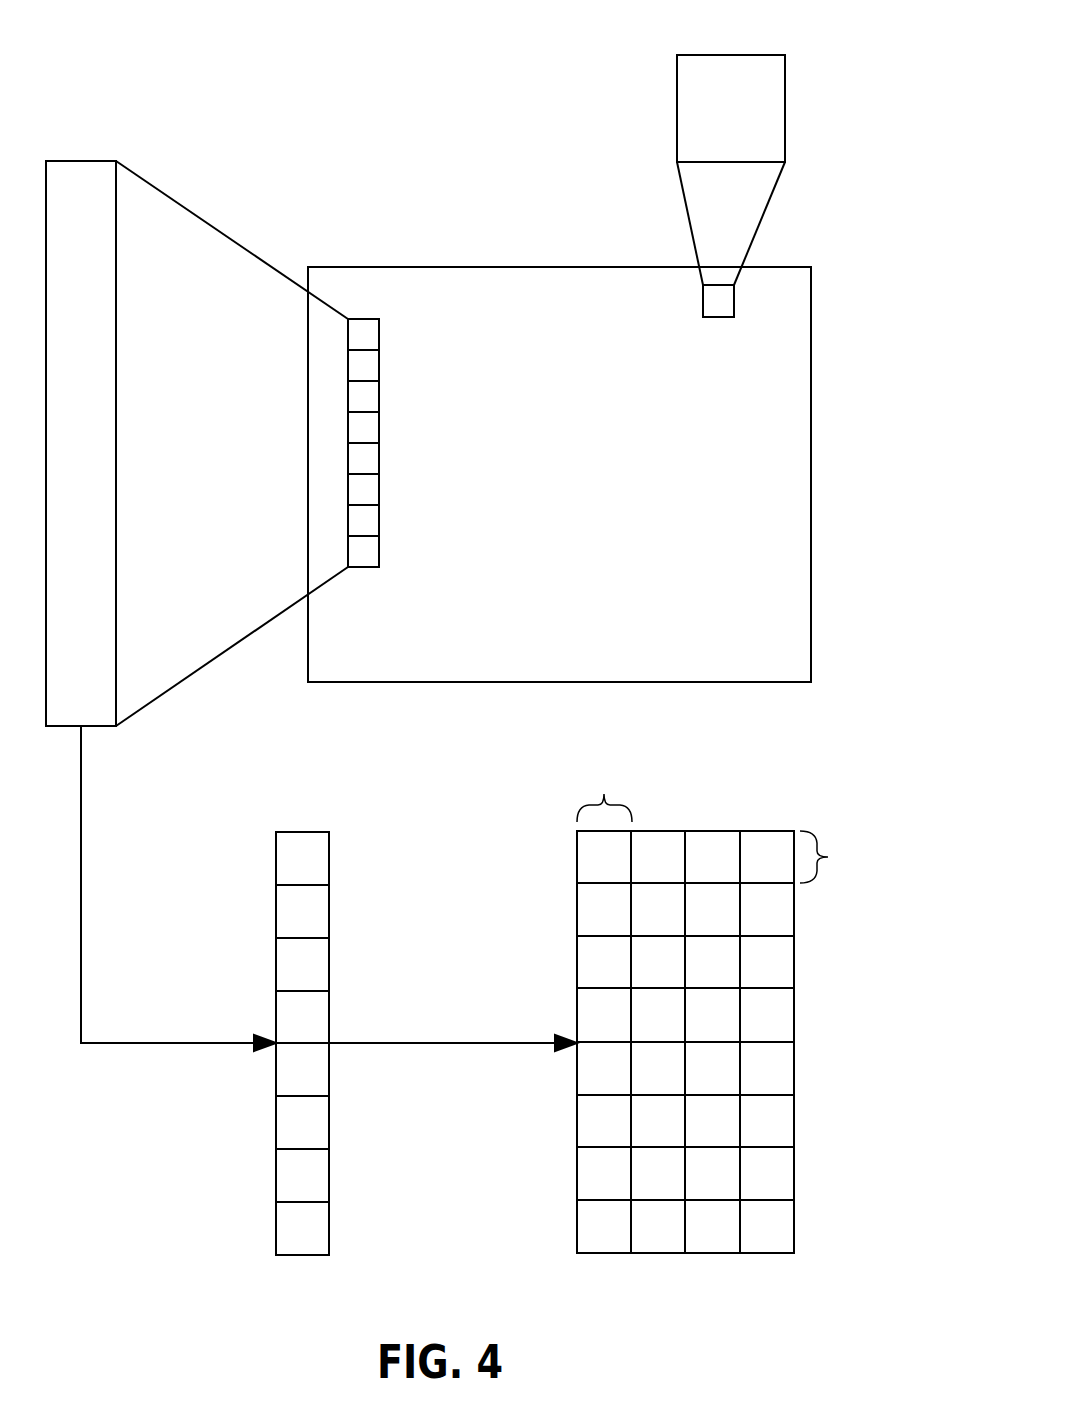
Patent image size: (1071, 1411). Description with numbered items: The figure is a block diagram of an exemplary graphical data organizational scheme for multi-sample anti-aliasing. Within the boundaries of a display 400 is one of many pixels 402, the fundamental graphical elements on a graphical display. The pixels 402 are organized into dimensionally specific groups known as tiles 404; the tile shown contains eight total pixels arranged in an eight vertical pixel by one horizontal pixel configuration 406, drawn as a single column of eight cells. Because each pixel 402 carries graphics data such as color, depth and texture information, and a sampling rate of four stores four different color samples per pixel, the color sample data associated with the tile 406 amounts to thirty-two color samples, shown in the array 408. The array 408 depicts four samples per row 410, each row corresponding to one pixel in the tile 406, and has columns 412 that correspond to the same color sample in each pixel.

The display 400 is at (363, 266).
The pixel 402 is at (765, 55).
The tile 404 is at (78, 161).
The eight vertical pixel by one horizontal pixel configuration 406 is at (303, 832).
The array 408 is at (741, 802).
The row 410 is at (838, 857).
The column 412 is at (604, 792).